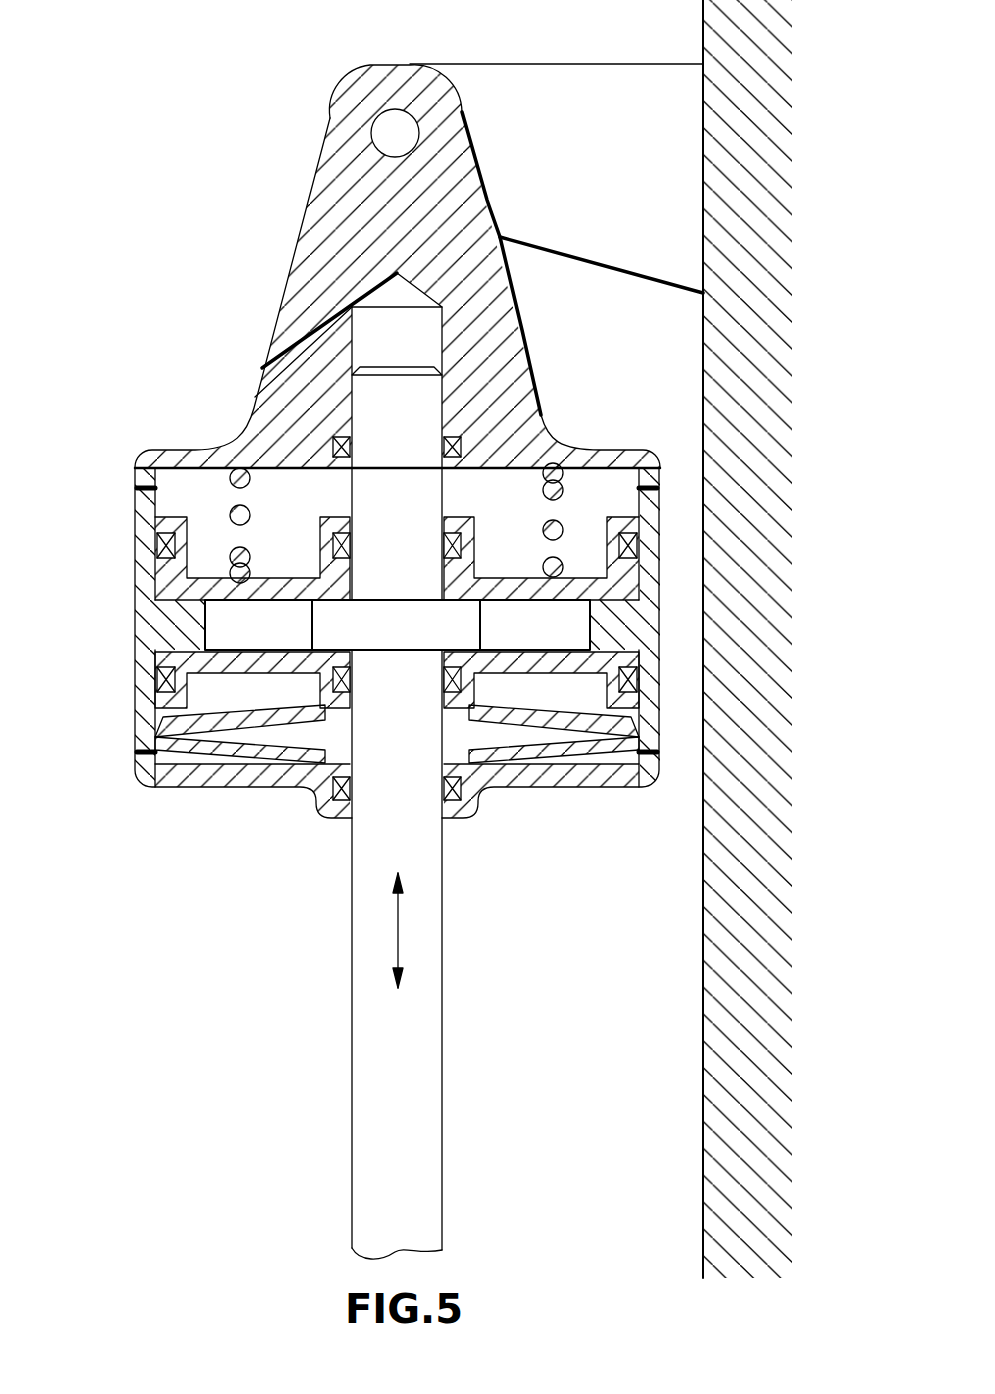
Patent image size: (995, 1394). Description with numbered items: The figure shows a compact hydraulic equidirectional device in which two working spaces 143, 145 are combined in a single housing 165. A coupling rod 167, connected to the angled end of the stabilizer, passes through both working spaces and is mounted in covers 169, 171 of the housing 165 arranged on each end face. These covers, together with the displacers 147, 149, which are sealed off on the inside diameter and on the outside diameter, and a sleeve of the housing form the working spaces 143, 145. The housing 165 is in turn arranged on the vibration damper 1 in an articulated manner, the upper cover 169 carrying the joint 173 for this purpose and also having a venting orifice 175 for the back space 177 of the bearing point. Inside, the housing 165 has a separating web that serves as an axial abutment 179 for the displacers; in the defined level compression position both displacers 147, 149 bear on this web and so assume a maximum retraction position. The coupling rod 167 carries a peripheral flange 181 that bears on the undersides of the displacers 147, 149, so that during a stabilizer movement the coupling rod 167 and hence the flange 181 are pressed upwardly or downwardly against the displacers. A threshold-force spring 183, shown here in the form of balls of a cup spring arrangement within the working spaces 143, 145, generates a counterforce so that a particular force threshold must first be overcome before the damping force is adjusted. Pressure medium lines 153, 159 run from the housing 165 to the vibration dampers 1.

The vibration damper 1 is at (702, 943).
The working space 143 is at (190, 490).
The working space 145 is at (157, 737).
The displacer 147 is at (183, 587).
The displacer 149 is at (163, 705).
The pressure medium line 153 is at (145, 490).
The pressure medium line 159 is at (137, 753).
The housing 165 is at (130, 637).
The coupling rod 167 is at (427, 952).
The cover 169 is at (250, 460).
The cover 171 is at (248, 775).
The joint 173 is at (388, 128).
The venting orifice 175 is at (298, 347).
The back space 177 is at (373, 318).
The axial abutment 179 is at (180, 627).
The peripheral flange 181 is at (452, 633).
The threshold-force spring 183 is at (238, 514).